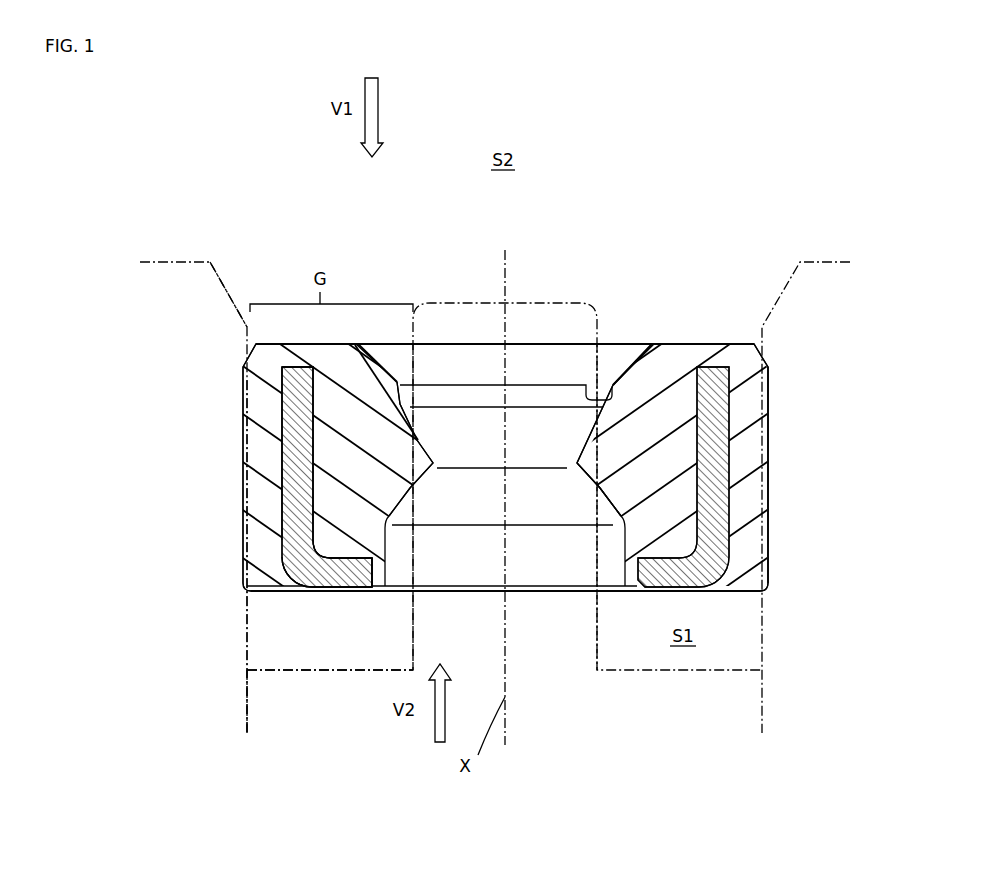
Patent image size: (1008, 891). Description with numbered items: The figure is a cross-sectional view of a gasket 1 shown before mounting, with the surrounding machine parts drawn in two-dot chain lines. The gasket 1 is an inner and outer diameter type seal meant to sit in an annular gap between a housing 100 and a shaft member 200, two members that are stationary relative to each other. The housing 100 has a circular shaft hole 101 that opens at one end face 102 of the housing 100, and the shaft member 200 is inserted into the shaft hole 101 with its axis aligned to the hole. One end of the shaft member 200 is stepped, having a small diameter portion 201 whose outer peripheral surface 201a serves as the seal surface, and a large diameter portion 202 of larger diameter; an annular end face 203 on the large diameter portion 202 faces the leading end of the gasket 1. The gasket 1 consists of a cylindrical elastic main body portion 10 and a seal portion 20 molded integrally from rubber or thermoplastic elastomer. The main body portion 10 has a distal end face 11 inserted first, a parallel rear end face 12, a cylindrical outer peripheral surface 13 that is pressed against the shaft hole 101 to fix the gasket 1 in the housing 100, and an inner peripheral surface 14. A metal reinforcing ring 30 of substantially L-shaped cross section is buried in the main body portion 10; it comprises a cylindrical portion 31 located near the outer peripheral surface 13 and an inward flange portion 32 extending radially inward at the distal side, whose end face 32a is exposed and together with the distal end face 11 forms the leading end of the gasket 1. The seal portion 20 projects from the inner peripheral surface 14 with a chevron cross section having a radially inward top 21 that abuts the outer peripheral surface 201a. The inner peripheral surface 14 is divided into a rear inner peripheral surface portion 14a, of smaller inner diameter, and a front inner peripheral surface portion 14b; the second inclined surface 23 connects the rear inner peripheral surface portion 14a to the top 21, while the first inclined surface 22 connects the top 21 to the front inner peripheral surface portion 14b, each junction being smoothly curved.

The gasket 1 is at (413, 208).
The main body portion 10 is at (297, 330).
The distal end face 11 is at (712, 593).
The rear end face 12 is at (686, 343).
The outer peripheral surface 13 is at (770, 448).
The inner peripheral surface 14 is at (533, 477).
The rear inner peripheral surface portion 14a is at (598, 343).
The front inner peripheral surface portion 14b is at (628, 587).
The seal portion 20 is at (422, 440).
The top 21 is at (578, 467).
The first inclined surface 22 is at (600, 510).
The second inclined surface 23 is at (573, 448).
The reinforcing ring 30 is at (315, 451).
The cylindrical portion 31 is at (282, 410).
The inward flange portion 32 is at (300, 543).
The end face 32a is at (385, 578).
The housing 100 is at (158, 249).
The shaft hole 101 is at (255, 333).
The one end face 102 is at (197, 260).
The shaft member 200 is at (479, 284).
The small diameter portion 201 is at (430, 610).
The outer peripheral surface 201a is at (417, 635).
The large diameter portion 202 is at (268, 708).
The annular end face 203 is at (292, 670).